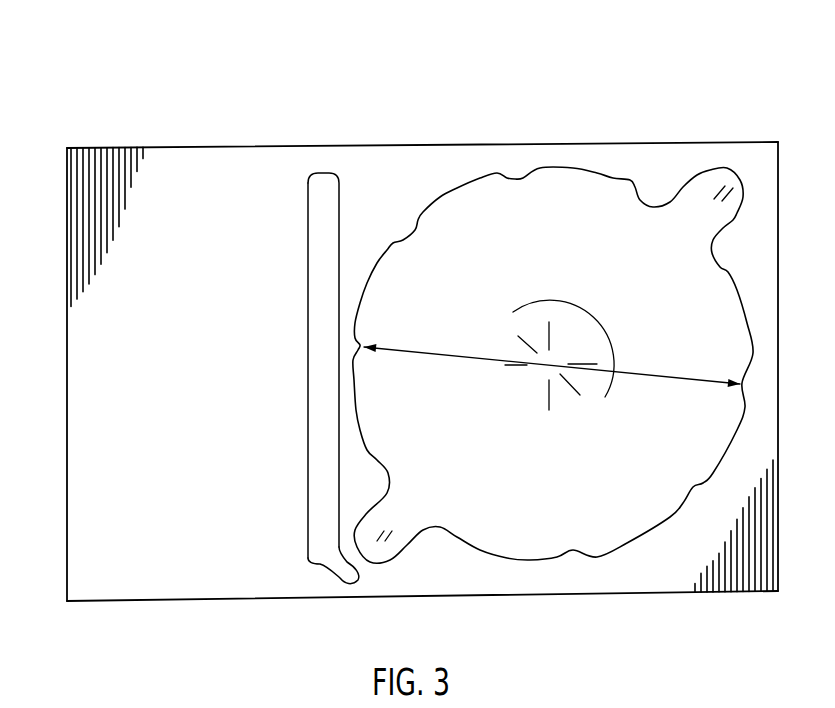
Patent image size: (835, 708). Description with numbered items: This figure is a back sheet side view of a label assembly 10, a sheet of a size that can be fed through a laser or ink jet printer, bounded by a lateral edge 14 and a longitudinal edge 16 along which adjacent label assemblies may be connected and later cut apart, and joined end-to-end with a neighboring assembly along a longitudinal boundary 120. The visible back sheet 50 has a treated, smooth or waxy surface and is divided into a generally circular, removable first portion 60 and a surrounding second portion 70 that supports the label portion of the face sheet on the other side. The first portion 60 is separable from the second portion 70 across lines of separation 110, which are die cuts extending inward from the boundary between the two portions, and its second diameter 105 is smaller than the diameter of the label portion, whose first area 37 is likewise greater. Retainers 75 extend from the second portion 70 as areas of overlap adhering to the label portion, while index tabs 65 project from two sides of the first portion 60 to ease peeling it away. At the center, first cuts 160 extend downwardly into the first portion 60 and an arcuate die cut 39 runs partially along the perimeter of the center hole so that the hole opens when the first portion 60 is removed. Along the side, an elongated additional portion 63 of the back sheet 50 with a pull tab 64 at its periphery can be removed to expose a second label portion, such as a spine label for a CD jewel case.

The label assembly 10 is at (143, 93).
The lateral edge 14 is at (67, 435).
The longitudinal edge 16 is at (318, 146).
The first area 37 is at (413, 392).
The die cut 39 is at (597, 312).
The back sheet 50 is at (667, 142).
The first portion 60 is at (735, 336).
The additional portion 63 is at (313, 393).
The pull tab 64 is at (357, 578).
The index tab 65 is at (733, 220).
The second portion 70 is at (198, 582).
The retainers 75 is at (523, 178).
The second diameter 105 is at (660, 375).
The lines of separation 110 is at (452, 182).
The longitudinal boundary 120 is at (252, 146).
The first cuts 160 is at (515, 351).